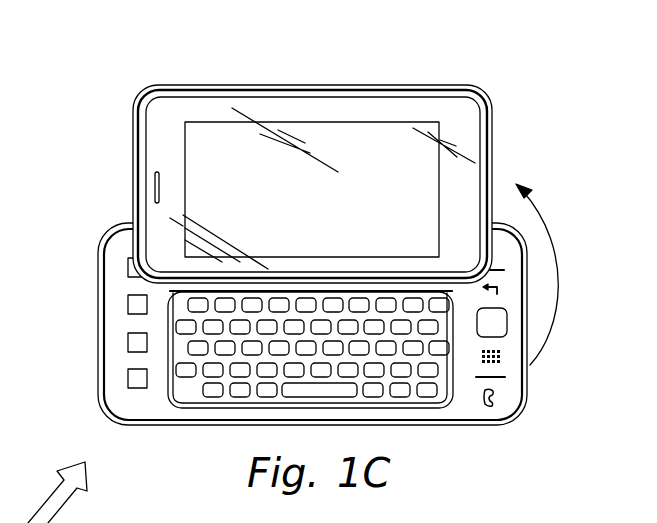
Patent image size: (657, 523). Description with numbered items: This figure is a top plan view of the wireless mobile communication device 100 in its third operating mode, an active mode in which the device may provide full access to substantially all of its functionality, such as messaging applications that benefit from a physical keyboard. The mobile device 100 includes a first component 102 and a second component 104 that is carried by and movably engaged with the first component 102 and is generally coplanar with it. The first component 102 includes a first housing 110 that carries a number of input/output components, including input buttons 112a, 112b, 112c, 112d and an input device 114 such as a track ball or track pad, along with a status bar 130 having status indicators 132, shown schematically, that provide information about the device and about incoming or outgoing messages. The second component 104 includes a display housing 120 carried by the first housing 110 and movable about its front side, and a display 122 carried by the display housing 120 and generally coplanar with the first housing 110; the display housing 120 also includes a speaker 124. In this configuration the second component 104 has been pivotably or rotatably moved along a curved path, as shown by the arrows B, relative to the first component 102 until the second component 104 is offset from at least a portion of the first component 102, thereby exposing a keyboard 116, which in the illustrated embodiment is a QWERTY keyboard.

The wireless mobile communication device 100 is at (557, 81).
The first component 102 is at (175, 421).
The second component 104 is at (489, 132).
The first housing 110 is at (527, 386).
The input button 112a is at (490, 250).
The input button 112b is at (497, 287).
The input button 112c is at (500, 357).
The input button 112d is at (492, 398).
The input device 114 is at (500, 322).
The keyboard 116 is at (388, 350).
The display housing 120 is at (425, 107).
The display 122 is at (355, 138).
The speaker 124 is at (157, 170).
The status bar 130 is at (122, 252).
The status indicators 132 is at (128, 305).
The arrows B is at (557, 336).